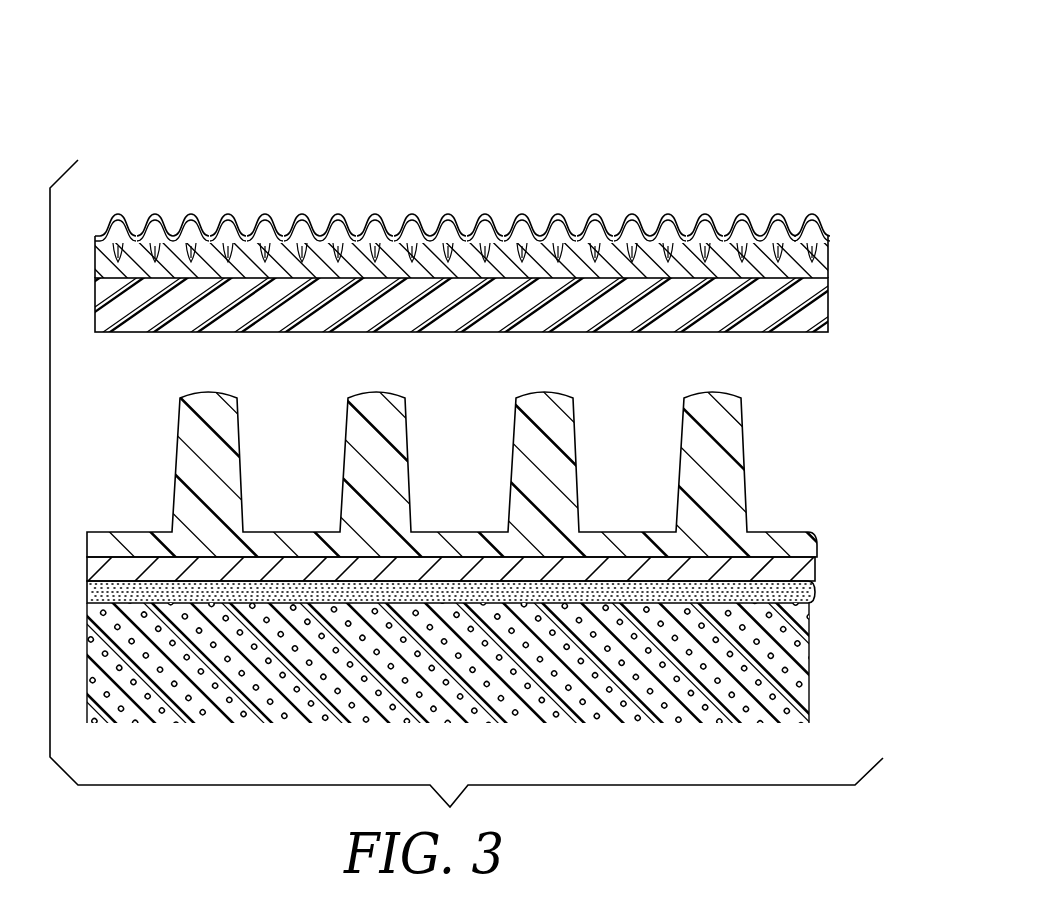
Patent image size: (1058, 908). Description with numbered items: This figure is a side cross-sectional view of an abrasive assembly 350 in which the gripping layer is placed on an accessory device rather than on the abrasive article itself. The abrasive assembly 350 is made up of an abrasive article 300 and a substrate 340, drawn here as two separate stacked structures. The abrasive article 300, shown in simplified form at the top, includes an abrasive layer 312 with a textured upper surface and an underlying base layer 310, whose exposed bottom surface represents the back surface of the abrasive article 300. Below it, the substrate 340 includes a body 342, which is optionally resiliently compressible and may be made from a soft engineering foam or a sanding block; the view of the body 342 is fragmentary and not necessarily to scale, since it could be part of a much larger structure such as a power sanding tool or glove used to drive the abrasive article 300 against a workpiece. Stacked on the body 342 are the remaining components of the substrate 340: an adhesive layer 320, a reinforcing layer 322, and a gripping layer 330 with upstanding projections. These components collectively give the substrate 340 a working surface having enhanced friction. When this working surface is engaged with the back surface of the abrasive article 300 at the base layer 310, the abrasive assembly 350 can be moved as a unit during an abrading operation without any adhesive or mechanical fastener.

The abrasive article 300 is at (787, 80).
The abrasive assembly 350 is at (733, 182).
The base layer 310 is at (810, 298).
The abrasive layer 312 is at (832, 218).
The substrate 340 is at (783, 412).
The gripping layer 330 is at (787, 532).
The reinforcing layer 322 is at (790, 568).
The adhesive layer 320 is at (800, 594).
The body 342 is at (800, 658).